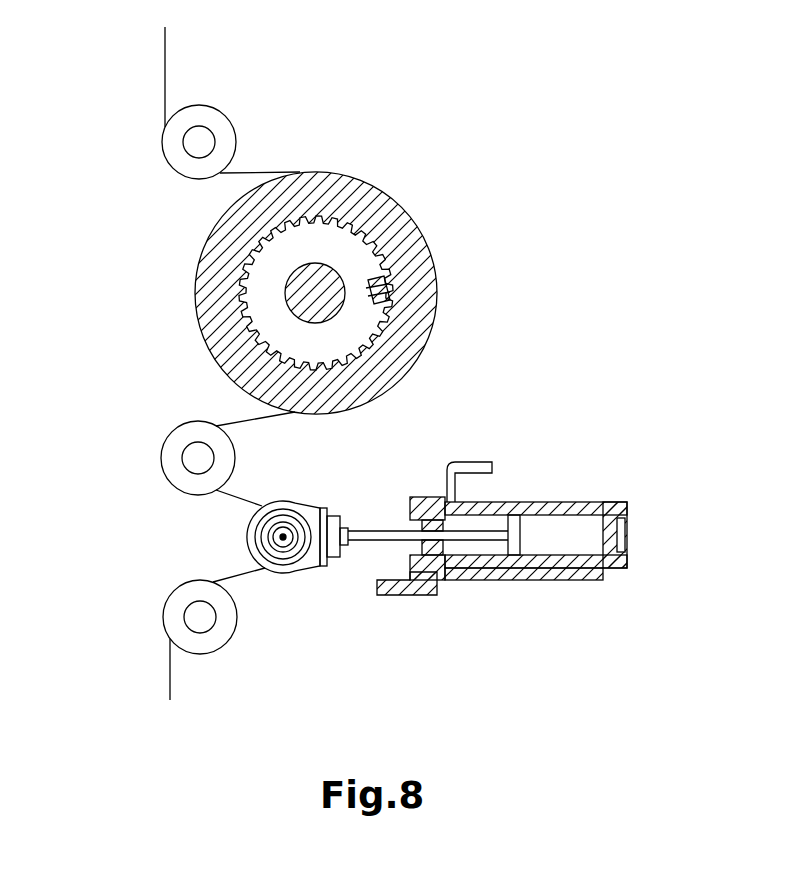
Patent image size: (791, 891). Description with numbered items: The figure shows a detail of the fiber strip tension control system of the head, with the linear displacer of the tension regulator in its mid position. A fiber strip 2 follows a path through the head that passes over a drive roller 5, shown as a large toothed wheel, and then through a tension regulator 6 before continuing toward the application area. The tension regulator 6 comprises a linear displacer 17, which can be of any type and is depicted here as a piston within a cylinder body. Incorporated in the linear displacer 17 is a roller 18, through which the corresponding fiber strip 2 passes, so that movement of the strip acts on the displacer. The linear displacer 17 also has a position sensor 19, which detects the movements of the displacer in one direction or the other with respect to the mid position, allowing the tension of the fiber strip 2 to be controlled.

The fiber strip 2 is at (165, 72).
The drive roller 5 is at (214, 285).
The tension regulator 6 is at (528, 520).
The linear displacer 17 is at (583, 532).
The roller 18 is at (250, 538).
The position sensor 19 is at (530, 573).